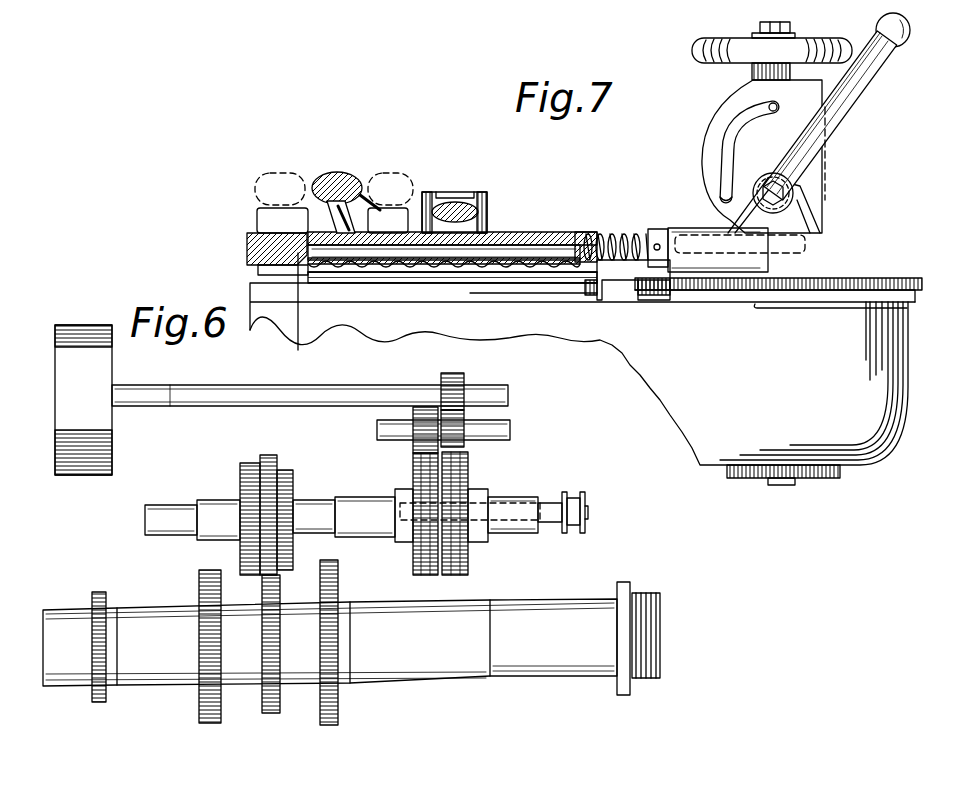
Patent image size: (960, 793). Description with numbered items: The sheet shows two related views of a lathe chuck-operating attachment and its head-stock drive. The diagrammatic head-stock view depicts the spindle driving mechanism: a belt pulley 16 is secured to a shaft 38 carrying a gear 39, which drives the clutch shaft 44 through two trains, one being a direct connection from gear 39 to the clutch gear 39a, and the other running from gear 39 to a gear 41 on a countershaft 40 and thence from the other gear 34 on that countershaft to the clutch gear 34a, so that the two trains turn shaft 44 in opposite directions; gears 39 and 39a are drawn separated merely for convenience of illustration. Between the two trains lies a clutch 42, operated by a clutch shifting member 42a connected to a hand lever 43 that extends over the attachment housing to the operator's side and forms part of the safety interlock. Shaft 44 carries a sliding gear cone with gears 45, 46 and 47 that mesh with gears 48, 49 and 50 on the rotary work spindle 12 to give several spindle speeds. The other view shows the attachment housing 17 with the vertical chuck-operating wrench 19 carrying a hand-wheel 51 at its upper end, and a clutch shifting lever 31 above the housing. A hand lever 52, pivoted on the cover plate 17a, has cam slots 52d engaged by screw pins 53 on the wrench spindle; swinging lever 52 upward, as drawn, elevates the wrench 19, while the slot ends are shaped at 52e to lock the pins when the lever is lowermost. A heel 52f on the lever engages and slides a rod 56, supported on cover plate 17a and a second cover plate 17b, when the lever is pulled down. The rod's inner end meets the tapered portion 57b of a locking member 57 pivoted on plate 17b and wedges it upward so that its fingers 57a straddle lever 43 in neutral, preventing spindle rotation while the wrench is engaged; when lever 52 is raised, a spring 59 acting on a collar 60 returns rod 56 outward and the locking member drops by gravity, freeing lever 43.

In FIG. 6, the rotary work spindle 12 is at (548, 683).
In FIG. 6, the belt pulley 16 is at (65, 345).
In FIG. 7, the housing 17 is at (887, 443).
In FIG. 7, the cover plate 17a is at (887, 278).
In FIG. 7, the second cover plate 17b is at (560, 233).
In FIG. 7, the chuck opening and closing member or wrench 19 is at (788, 484).
In FIG. 7, the clutch shifting lever 31 is at (485, 208).
In FIG. 6, the gear 34 is at (413, 449).
In FIG. 6, the clutch gear 34a is at (415, 563).
In FIG. 6, the shaft 38 is at (205, 390).
In FIG. 6, the gear 39 is at (465, 375).
In FIG. 6, the clutch gear 39a is at (470, 571).
In FIG. 6, the countershaft 40 is at (512, 427).
In FIG. 6, the gear 41 is at (466, 446).
In FIG. 6, the clutch 42 is at (468, 553).
In FIG. 6, the clutch shifting member 42a is at (567, 495).
In FIG. 7, the hand lever 43 is at (340, 172).
In FIG. 6, the clutch shaft 44 is at (352, 498).
In FIG. 6, the gear 45 is at (240, 478).
In FIG. 6, the gear 46 is at (265, 456).
In FIG. 6, the gear 47 is at (285, 470).
In FIG. 6, the gear 48 is at (205, 706).
In FIG. 6, the gear 49 is at (270, 716).
In FIG. 6, the gear 50 is at (330, 726).
In FIG. 7, the hand-wheel 51 is at (818, 38).
In FIG. 7, the hand lever 52 is at (870, 80).
In FIG. 7, the cam slot 52d is at (740, 143).
In FIG. 7, the locking end of cam slot 52e is at (722, 197).
In FIG. 7, the extension or heel 52f is at (822, 217).
In FIG. 7, the screw pins 53 is at (773, 108).
In FIG. 7, the rod 56 is at (533, 233).
In FIG. 7, the locking member 57 is at (247, 251).
In FIG. 7, the upstanding fingers 57a is at (430, 170).
In FIG. 7, the wedge-shaped or tapered portion 57b is at (291, 308).
In FIG. 7, the spring 59 is at (613, 233).
In FIG. 7, the collar 60 is at (653, 232).